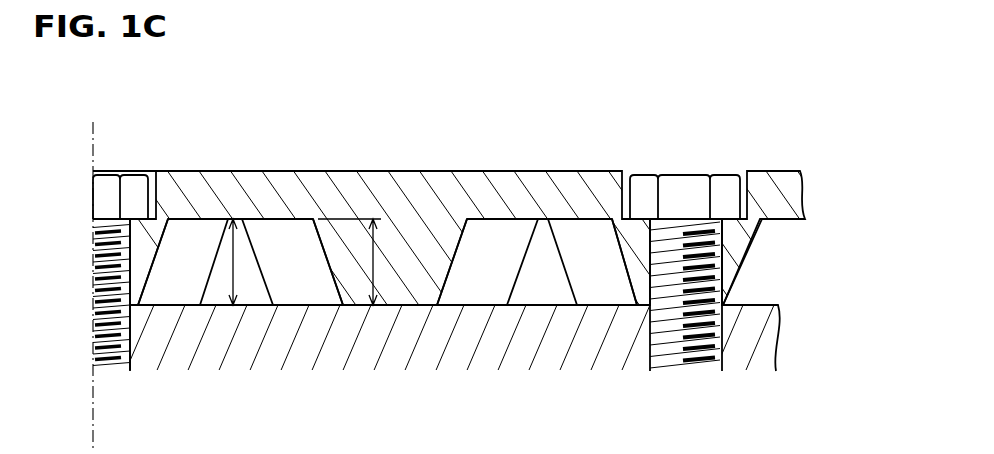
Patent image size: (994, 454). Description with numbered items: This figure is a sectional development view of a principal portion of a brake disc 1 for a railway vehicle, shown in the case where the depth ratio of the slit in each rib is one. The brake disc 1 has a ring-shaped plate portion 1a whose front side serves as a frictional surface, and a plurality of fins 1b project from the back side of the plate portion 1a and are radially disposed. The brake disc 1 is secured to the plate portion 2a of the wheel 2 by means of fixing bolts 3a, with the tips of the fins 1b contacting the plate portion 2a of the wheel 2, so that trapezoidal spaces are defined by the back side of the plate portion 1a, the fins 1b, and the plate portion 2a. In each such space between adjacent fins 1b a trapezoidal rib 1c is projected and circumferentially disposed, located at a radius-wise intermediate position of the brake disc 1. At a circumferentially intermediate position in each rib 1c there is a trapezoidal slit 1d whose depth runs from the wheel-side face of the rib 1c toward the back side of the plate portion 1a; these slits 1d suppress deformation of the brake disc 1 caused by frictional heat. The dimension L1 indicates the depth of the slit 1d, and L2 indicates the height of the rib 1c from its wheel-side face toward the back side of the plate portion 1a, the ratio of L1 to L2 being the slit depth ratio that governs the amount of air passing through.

The brake disc 1 is at (596, 136).
The plate portion 1a is at (486, 200).
The fin 1b is at (130, 258).
The rib 1c is at (179, 272).
The slit 1d is at (218, 286).
The wheel 2 is at (640, 385).
The plate portion 2a is at (573, 343).
The fixing bolt 3a is at (109, 200).
The depth of slit L1 is at (243, 262).
The height of rib L2 is at (357, 262).